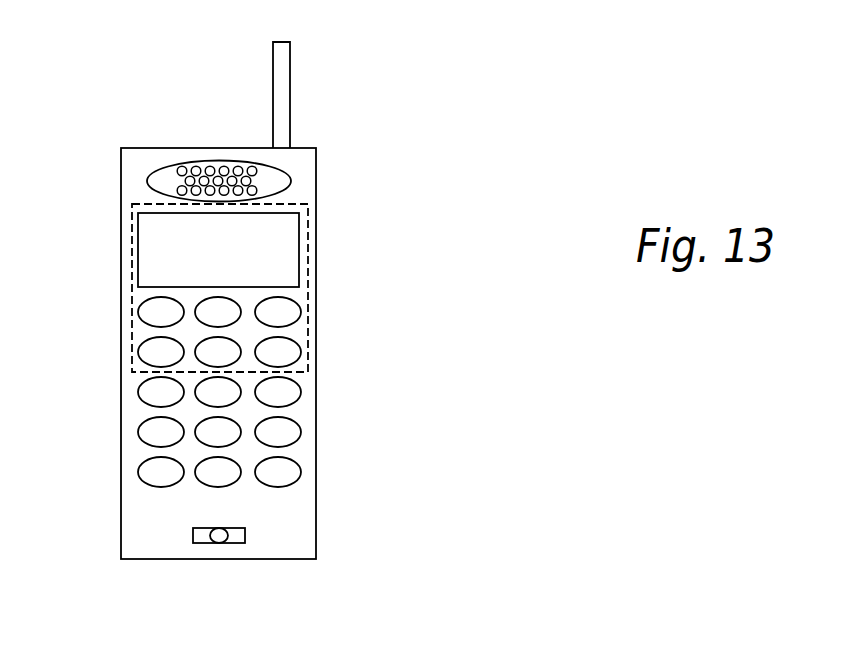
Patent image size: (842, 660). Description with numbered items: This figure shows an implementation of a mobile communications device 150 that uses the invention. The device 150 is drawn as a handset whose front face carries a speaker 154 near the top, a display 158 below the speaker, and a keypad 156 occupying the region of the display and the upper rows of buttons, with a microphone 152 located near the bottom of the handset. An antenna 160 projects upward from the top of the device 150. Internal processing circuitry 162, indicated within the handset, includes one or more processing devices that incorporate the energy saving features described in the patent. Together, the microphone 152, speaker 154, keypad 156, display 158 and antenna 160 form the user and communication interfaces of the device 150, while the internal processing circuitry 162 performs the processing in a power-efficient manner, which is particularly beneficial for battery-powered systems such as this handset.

The mobile communications device 150 is at (408, 192).
The microphone 152 is at (222, 540).
The speaker 154 is at (198, 160).
The keypad 156 is at (103, 376).
The display 158 is at (297, 249).
The antenna 160 is at (290, 111).
The internal processing circuitry 162 is at (310, 308).